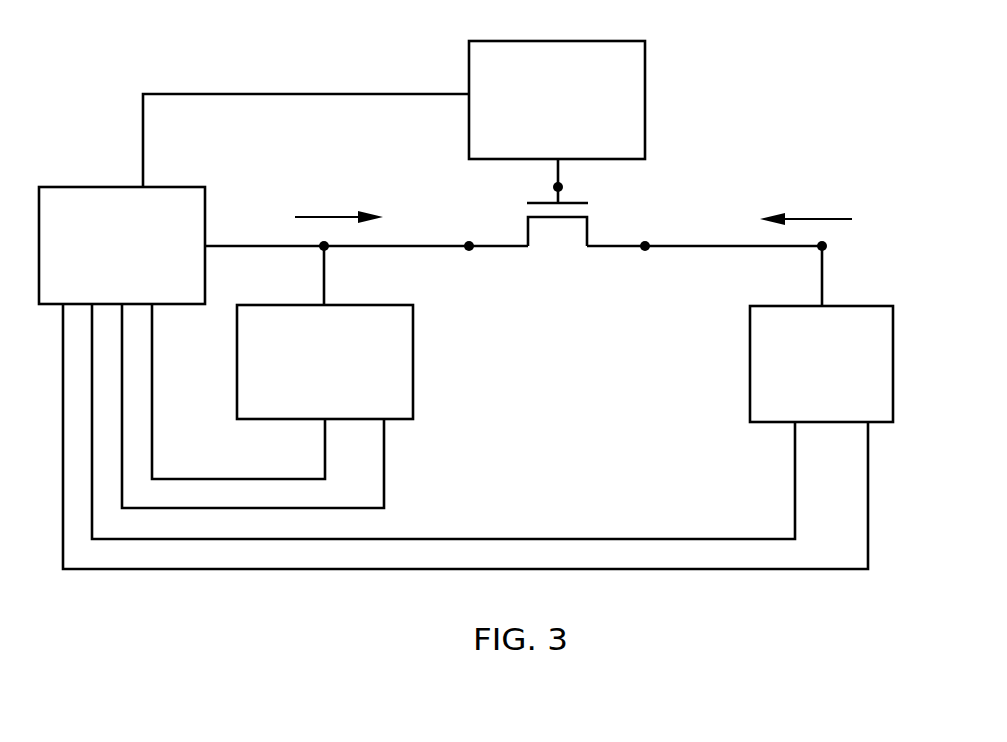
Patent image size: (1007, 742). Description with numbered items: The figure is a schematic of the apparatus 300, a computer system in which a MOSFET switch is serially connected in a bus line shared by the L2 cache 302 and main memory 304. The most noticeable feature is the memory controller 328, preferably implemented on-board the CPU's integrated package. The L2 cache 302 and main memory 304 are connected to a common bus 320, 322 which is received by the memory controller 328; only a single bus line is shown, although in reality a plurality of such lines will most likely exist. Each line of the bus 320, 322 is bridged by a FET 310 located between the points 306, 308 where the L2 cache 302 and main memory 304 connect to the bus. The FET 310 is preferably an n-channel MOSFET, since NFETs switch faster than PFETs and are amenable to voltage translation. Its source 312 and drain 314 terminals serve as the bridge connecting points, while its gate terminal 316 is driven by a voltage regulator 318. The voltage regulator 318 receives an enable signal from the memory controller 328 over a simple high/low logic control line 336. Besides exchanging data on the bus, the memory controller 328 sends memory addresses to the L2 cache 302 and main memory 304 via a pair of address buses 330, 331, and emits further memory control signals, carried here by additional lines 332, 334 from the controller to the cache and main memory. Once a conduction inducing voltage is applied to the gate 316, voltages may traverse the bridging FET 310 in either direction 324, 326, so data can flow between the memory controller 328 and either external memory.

The apparatus 300 is at (770, 95).
The L2 cache 302 is at (237, 362).
The main memory 304 is at (750, 362).
The connection point 306 is at (323, 248).
The connection point 308 is at (824, 247).
The FET 310 is at (559, 248).
The source terminal 312 is at (469, 249).
The drain terminal 314 is at (645, 249).
The gate terminal 316 is at (556, 186).
The voltage regulator 318 is at (645, 100).
The bus 320 is at (253, 245).
The bus 322 is at (716, 246).
The direction 324 is at (826, 217).
The direction 326 is at (323, 215).
The memory controller 328 is at (108, 187).
The address bus 330 is at (385, 493).
The address bus 331 is at (297, 569).
The cache control line 332 is at (268, 478).
The main memory control line 334 is at (690, 538).
The control line 336 is at (392, 94).